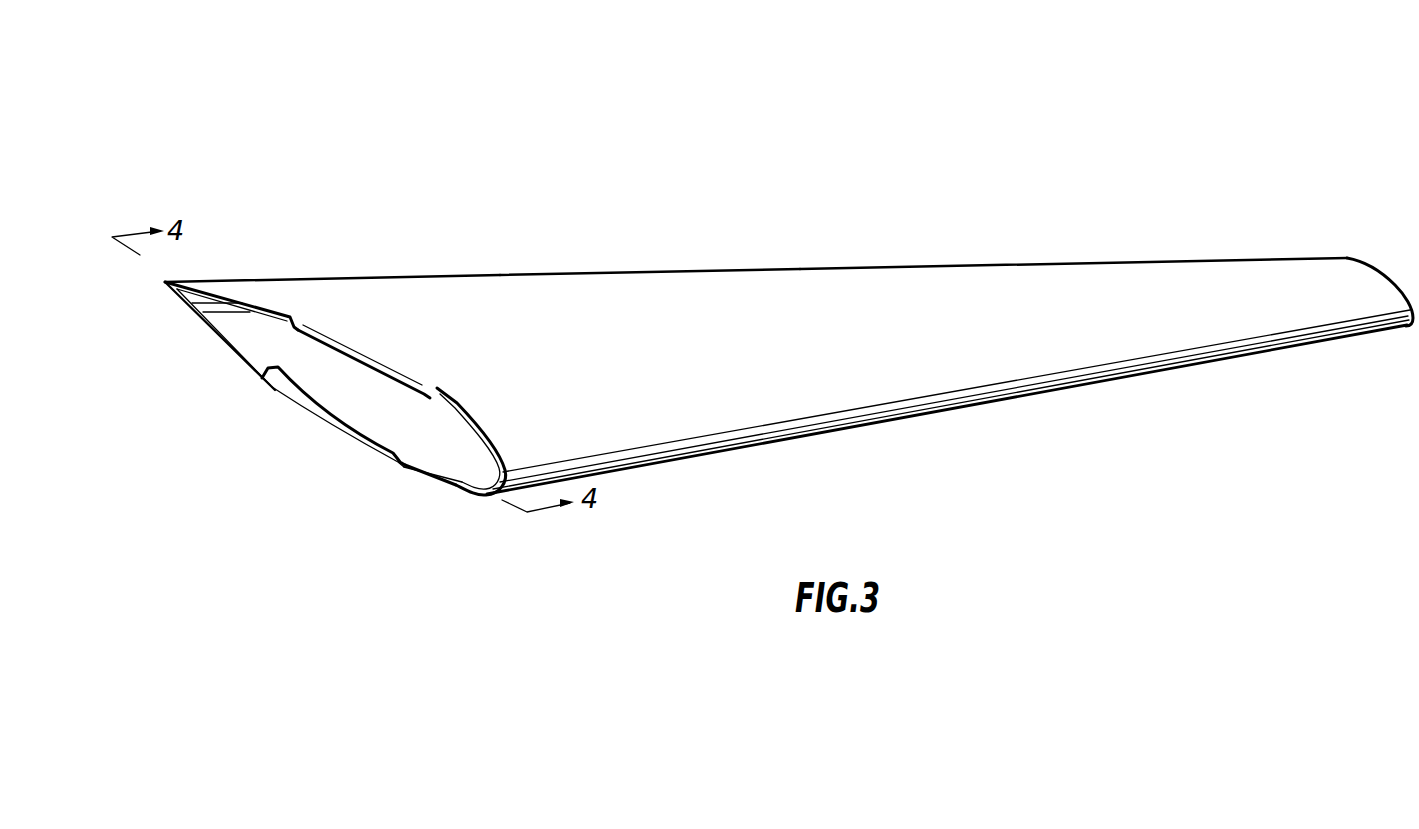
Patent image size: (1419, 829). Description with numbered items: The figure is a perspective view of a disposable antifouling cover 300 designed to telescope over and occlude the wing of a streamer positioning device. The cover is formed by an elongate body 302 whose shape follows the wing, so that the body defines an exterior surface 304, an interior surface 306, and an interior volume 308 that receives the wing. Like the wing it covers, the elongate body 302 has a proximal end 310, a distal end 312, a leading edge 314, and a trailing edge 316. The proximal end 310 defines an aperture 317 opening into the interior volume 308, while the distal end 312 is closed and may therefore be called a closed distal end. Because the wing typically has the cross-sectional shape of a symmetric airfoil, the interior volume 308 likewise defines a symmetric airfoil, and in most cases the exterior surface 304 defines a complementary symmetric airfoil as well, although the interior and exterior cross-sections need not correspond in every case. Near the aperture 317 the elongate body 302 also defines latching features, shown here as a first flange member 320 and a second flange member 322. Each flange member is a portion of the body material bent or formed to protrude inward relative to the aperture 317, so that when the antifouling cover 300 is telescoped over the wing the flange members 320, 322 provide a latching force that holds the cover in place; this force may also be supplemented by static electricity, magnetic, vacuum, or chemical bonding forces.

The antifouling cover 300 is at (266, 93).
The elongate body 302 is at (717, 292).
The exterior surface 304 is at (915, 336).
The interior surface 306 is at (317, 380).
The interior volume 308 is at (447, 460).
The proximal end 310 is at (260, 300).
The distal end 312 is at (1393, 284).
The leading edge 314 is at (823, 435).
The trailing edge 316 is at (873, 265).
The aperture 317 is at (470, 495).
The first flange member 320 is at (420, 385).
The second flange member 322 is at (342, 422).